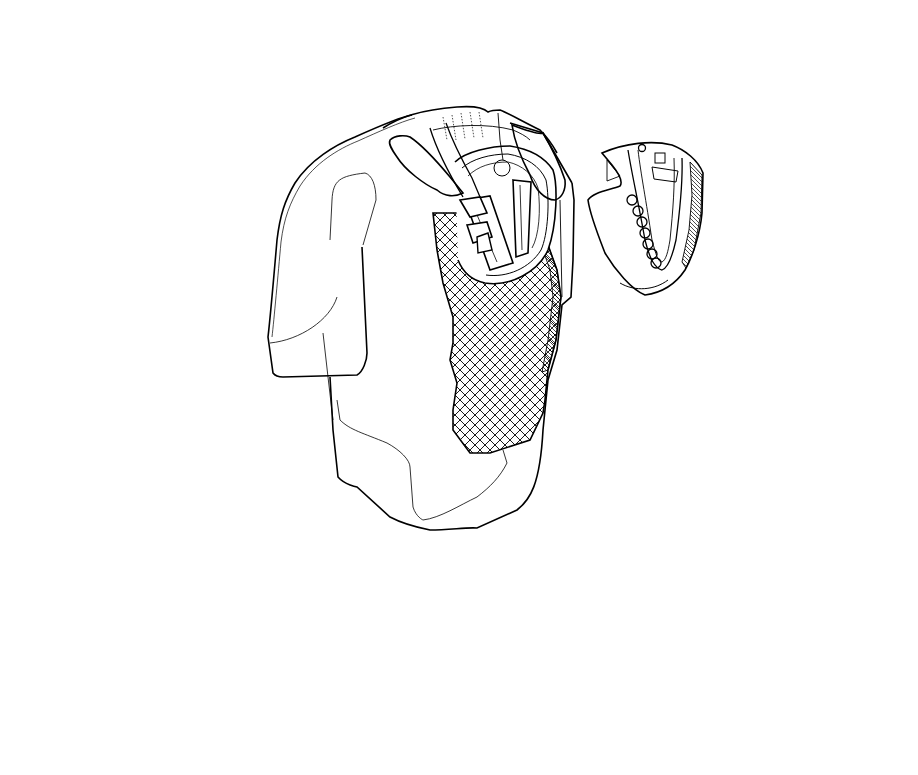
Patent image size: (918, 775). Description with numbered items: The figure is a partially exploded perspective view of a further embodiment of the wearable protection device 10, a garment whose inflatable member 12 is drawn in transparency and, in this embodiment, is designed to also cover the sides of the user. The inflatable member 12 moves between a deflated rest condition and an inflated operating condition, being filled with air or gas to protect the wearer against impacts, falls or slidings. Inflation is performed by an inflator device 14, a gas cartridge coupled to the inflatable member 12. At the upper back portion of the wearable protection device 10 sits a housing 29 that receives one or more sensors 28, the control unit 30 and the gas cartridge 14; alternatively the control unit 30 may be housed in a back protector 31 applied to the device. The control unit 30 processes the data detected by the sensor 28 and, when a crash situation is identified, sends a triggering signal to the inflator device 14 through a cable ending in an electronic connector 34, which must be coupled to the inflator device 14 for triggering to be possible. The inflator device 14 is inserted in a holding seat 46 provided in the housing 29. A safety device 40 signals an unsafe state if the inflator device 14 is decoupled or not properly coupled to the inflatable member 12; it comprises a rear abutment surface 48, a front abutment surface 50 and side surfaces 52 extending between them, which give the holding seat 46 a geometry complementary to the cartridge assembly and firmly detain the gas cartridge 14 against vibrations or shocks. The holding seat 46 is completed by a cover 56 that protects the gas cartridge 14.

The wearable protection device 10 is at (411, 355).
The inflatable member 12 is at (262, 299).
The inflator device 14 is at (553, 192).
The sensor 28 is at (487, 195).
The housing 29 is at (562, 131).
The control unit 30 is at (530, 230).
The back protector 31 is at (507, 420).
The electronic connector 34 is at (507, 270).
The safety device 40 is at (461, 231).
The holding seat 46 is at (463, 213).
The rear abutment surface 48 is at (487, 260).
The front abutment surface 50 is at (465, 203).
The side surfaces 52 is at (486, 262).
The cover 56 is at (692, 193).